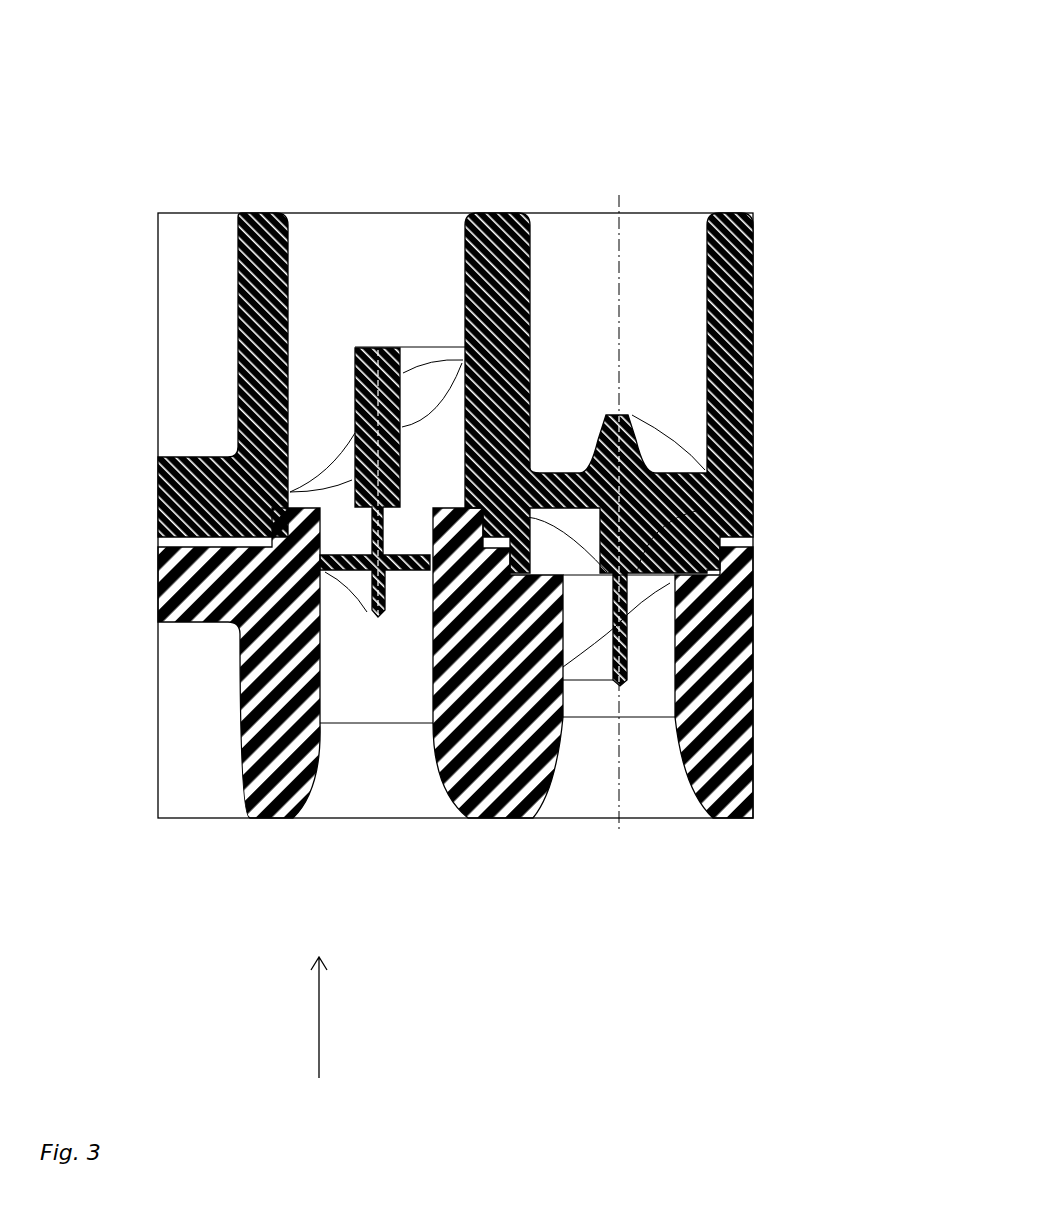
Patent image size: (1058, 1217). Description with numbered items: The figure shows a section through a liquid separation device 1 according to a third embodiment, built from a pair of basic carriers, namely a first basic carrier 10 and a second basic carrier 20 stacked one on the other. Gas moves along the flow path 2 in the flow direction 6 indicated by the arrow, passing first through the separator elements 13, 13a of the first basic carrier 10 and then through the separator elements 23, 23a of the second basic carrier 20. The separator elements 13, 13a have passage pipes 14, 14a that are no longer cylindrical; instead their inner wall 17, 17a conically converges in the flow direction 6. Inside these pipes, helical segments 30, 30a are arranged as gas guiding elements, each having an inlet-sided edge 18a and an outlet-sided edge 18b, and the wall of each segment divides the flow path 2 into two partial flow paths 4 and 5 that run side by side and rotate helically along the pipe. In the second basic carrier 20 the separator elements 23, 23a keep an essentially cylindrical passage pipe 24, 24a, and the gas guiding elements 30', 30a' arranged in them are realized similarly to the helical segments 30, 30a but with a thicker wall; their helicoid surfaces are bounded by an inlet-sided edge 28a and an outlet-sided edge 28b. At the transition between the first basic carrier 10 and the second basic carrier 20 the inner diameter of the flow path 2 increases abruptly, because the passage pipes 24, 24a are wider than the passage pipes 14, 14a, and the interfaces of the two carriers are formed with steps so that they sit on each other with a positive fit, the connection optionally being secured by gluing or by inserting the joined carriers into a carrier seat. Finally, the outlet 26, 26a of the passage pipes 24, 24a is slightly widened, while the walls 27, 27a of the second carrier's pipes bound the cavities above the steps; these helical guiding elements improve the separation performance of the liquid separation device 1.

The liquid separation device 1 is at (706, 86).
The flow path 2 is at (569, 222).
The partial flow path 4 is at (654, 680).
The partial flow path 5 is at (584, 652).
The flow direction 6 is at (319, 1022).
The first basic carrier 10 is at (757, 677).
The separator element 13 is at (660, 806).
The separator element 13a is at (426, 763).
The passage pipe 14 is at (659, 711).
The passage pipe 14a is at (343, 862).
The inner wall 17 is at (550, 785).
The inner wall 17a is at (320, 694).
The inlet-sided edge 18a is at (358, 600).
The outlet-sided edge 18b is at (399, 520).
The second basic carrier 20 is at (757, 338).
The separator element 23 is at (665, 270).
The separator element 23a is at (360, 260).
The passage pipe 24 is at (665, 313).
The passage pipe 24a is at (328, 348).
The outlet 26 is at (631, 212).
The outlet 26a is at (323, 212).
The wall 27 is at (532, 293).
The wall 27a is at (456, 251).
The inlet-sided edge 28a is at (333, 507).
The outlet-sided edge 28b is at (408, 347).
The helical segment 30 is at (591, 683).
The gas guiding element 30' is at (598, 378).
The helical segment 30a is at (391, 628).
The gas guiding element 30a' is at (347, 450).